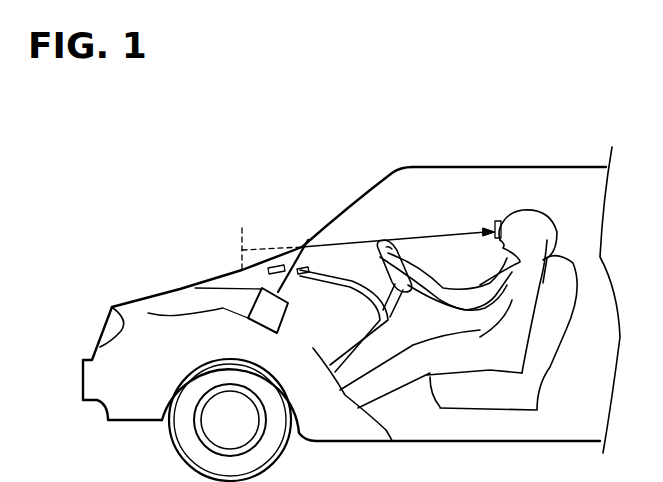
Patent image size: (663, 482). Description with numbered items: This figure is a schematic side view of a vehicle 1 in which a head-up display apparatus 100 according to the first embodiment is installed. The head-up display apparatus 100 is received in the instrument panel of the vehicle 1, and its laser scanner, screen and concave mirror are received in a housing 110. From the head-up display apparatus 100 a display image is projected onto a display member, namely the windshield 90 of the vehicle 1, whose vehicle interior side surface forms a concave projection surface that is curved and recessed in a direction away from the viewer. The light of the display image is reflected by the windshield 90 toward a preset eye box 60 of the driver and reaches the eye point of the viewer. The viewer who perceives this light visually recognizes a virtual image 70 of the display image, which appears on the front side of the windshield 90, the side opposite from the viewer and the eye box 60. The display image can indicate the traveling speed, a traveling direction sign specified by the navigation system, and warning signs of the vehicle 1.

The vehicle 1 is at (565, 167).
The eye box 60 is at (497, 220).
The virtual image 70 is at (242, 228).
The windshield 90 is at (340, 213).
The head-up display apparatus 100 is at (195, 288).
The housing 110 is at (148, 313).